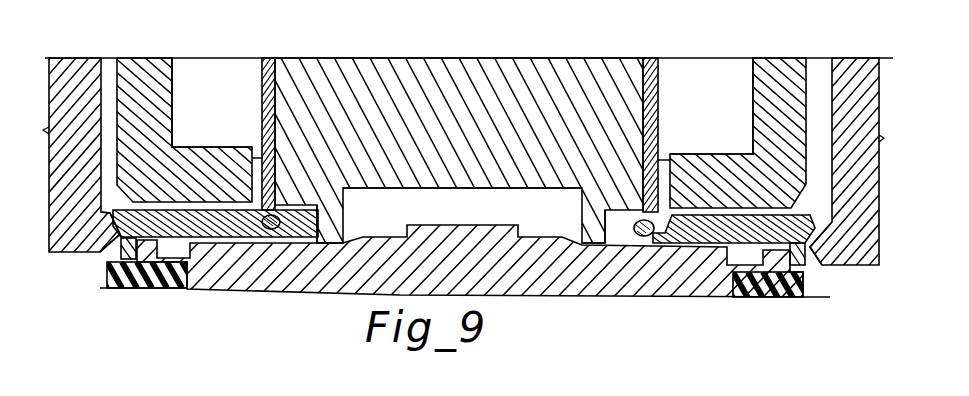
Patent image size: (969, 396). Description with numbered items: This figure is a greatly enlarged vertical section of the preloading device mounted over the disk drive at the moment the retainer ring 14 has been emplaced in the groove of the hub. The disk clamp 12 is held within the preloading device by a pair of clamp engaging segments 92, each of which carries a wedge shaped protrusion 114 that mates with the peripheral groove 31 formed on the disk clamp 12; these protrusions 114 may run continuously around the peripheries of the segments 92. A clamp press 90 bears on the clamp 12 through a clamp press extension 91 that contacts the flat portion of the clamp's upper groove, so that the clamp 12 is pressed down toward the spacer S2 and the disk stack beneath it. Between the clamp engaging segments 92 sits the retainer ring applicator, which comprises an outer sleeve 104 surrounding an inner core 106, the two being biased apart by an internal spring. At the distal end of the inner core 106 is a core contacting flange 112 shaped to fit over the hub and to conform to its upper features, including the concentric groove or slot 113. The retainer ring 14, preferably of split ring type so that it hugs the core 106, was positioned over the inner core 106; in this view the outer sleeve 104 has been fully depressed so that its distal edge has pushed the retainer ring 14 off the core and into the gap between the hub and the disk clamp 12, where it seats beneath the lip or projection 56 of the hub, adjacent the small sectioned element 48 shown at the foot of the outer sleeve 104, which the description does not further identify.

The disk clamp 12 is at (190, 228).
The retainer ring 14 is at (247, 290).
The peripheral groove 31 is at (122, 303).
The O-ring seal 48 is at (268, 232).
The lip or projection 56 is at (318, 208).
The clamp press 90 is at (131, 63).
The clamp press extension 91 is at (207, 160).
The clamp engaging segments 92 is at (85, 80).
The outer sleeve 104 is at (263, 97).
The inner core 106 is at (322, 78).
The core contacting flange 112 is at (335, 252).
The concentric groove or slot 113 is at (316, 250).
The wedge shaped protrusion 114 is at (110, 250).
The spacer S2 is at (143, 290).